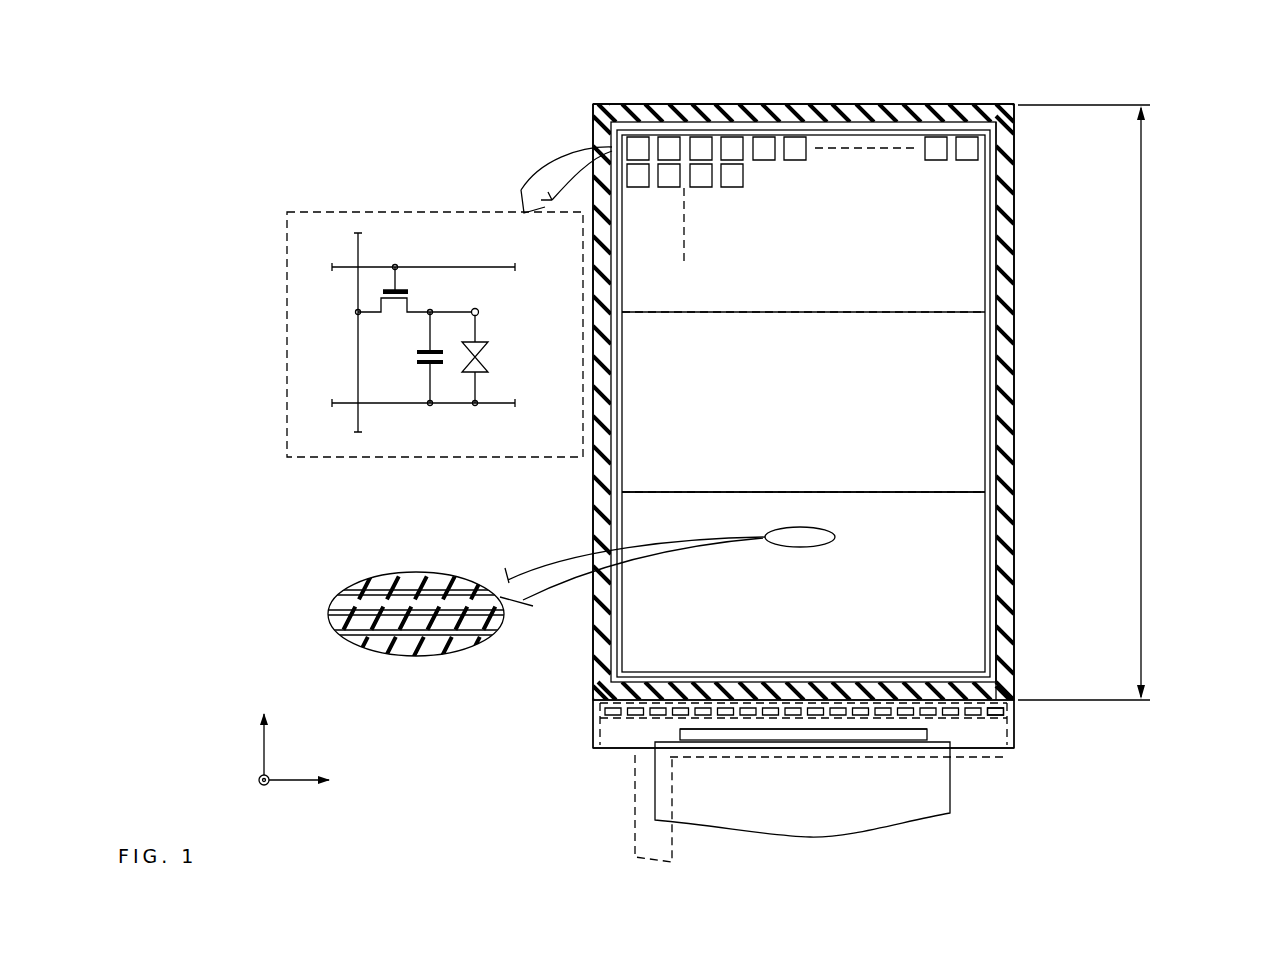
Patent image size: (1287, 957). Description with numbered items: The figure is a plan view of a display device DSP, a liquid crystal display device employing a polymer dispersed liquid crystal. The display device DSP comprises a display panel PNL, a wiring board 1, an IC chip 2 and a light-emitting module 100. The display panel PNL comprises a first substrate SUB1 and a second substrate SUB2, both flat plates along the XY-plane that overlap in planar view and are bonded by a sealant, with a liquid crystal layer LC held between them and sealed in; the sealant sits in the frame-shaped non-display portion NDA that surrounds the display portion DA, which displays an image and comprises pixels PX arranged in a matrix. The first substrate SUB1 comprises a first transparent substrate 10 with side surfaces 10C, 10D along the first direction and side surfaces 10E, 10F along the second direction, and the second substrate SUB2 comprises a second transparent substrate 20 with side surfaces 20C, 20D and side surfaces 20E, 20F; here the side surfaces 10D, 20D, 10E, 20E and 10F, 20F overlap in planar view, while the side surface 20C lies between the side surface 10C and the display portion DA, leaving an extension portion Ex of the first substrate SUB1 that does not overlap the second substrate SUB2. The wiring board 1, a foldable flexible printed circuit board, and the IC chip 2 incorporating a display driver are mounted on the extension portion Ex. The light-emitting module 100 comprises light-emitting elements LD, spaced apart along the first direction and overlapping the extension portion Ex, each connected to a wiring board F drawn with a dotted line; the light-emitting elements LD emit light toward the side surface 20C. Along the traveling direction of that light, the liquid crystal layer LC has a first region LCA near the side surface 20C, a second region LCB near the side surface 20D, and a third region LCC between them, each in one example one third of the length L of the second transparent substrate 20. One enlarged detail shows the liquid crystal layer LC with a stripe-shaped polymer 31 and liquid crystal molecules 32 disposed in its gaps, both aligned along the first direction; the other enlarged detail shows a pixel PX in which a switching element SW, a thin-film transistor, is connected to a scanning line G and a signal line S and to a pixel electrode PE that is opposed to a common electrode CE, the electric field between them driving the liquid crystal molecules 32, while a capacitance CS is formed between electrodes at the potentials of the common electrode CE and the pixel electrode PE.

The display device DSP is at (1202, 146).
The display panel PNL is at (1016, 101).
The display portion DA is at (972, 470).
The non-display portion NDA is at (1011, 516).
The pixel PX is at (763, 140).
The side surface 10D is at (847, 101).
The side surface 20D is at (803, 84).
The side surface 10F is at (1018, 398).
The side surface 20F is at (1071, 402).
The side surface 10E is at (590, 481).
The side surface 20E is at (530, 402).
The second region LCB is at (934, 212).
The third region LCC is at (934, 350).
The first region LCA is at (934, 547).
The seal SL is at (1010, 598).
The liquid crystal layer LC is at (978, 653).
The second substrate SUB2 is at (1013, 680).
The first substrate SUB1 is at (1008, 729).
The second transparent substrate 20 is at (1005, 709).
The first transparent substrate 10 is at (1016, 752).
The side surface 10C is at (1000, 754).
The side surface 20C is at (926, 706).
The length L is at (1089, 402).
The extension portion Ex is at (597, 734).
The light-emitting element LD is at (651, 720).
The wiring board F is at (598, 758).
The wiring board 1 is at (655, 814).
The IC chip 2 is at (743, 741).
The light-emitting module 100 is at (801, 725).
The polymer 31 is at (336, 622).
The liquid crystal molecule 32 is at (408, 634).
The scanning line G is at (342, 267).
The signal line S is at (358, 342).
The switching element SW is at (422, 300).
The pixel electrode PE is at (480, 312).
The capacitance CS is at (412, 357).
The common electrode CE is at (498, 406).